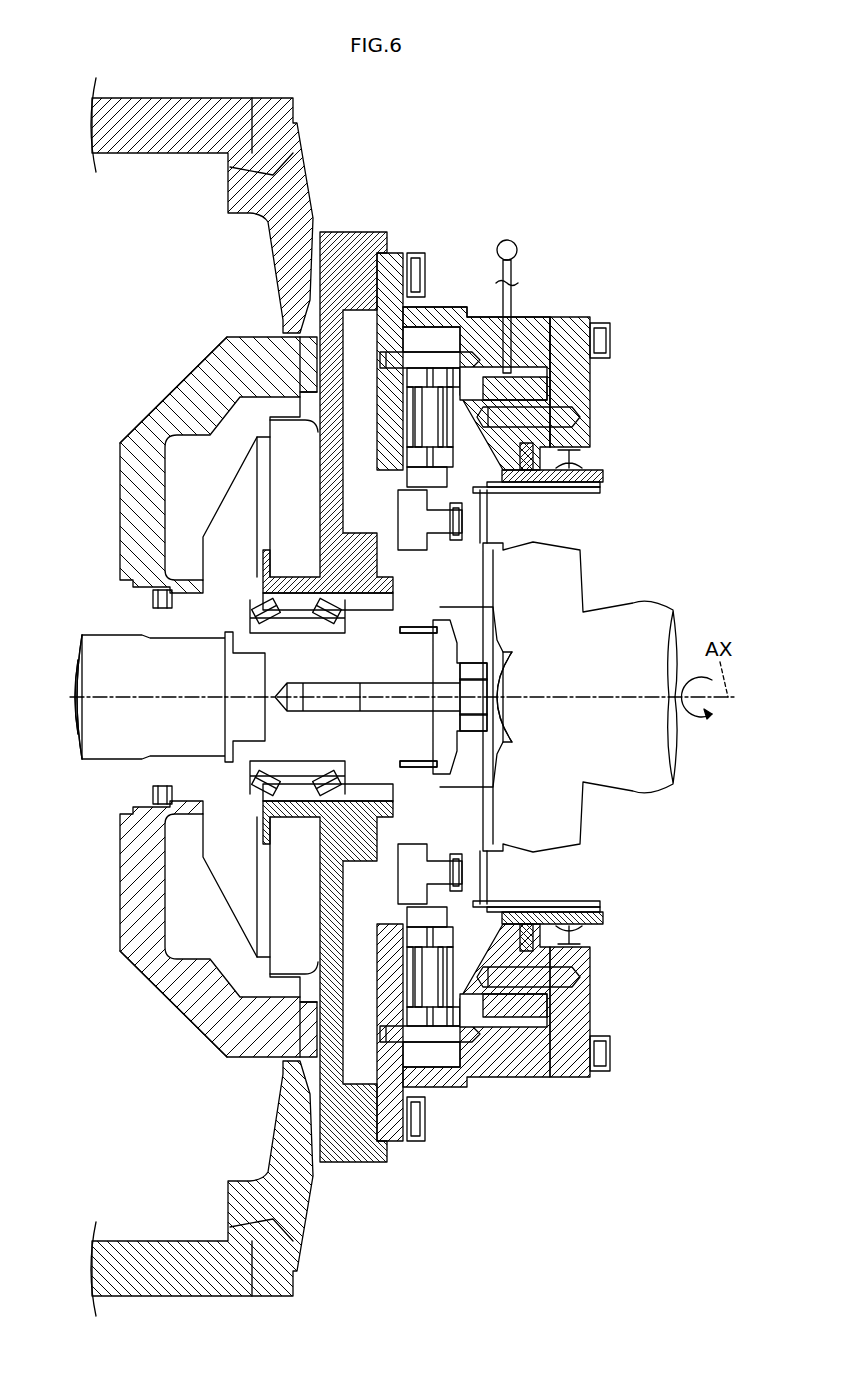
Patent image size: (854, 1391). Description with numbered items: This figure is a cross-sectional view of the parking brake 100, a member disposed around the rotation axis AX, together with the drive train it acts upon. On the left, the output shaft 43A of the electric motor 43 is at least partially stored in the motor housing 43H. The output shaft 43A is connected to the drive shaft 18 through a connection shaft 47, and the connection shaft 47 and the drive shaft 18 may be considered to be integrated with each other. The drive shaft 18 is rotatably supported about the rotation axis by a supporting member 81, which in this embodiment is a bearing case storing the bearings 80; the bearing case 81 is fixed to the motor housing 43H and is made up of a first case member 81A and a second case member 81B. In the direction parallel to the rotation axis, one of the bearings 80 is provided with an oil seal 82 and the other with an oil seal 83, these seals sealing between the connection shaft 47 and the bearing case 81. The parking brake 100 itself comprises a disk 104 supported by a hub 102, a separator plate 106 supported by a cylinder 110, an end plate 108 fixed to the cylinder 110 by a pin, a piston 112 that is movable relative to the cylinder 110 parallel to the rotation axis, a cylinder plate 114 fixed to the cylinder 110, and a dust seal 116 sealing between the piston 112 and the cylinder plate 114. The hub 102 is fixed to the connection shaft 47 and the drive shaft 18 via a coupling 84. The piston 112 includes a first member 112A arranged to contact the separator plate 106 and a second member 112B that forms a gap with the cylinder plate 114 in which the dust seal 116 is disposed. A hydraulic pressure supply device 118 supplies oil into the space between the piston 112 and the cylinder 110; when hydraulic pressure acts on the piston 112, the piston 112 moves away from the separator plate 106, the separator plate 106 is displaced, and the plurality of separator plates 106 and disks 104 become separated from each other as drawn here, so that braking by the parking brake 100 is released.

The drive shaft 18 is at (613, 627).
The electric motor 43 is at (173, 94).
The output shaft 43A is at (80, 633).
The motor housing 43H is at (232, 98).
The connection shaft 47 is at (412, 768).
The bearings 80 is at (332, 630).
The supporting member (bearing case) 81 is at (188, 465).
The first case member 81A is at (177, 398).
The second case member 81B is at (320, 380).
The oil seal 82 is at (153, 600).
The oil seal 83 is at (408, 626).
The coupling 84 is at (470, 597).
The parking brake 100 is at (586, 270).
The hub 102 is at (482, 497).
The disk 104 is at (441, 386).
The separator plate 106 is at (580, 418).
The end plate 108 is at (388, 474).
The cylinder 110 is at (540, 332).
The piston 112 is at (620, 488).
The first member 112A is at (565, 486).
The second member 112B is at (590, 480).
The cylinder plate 114 is at (588, 386).
The dust seal 116 is at (582, 458).
The hydraulic pressure supply device 118 is at (507, 238).